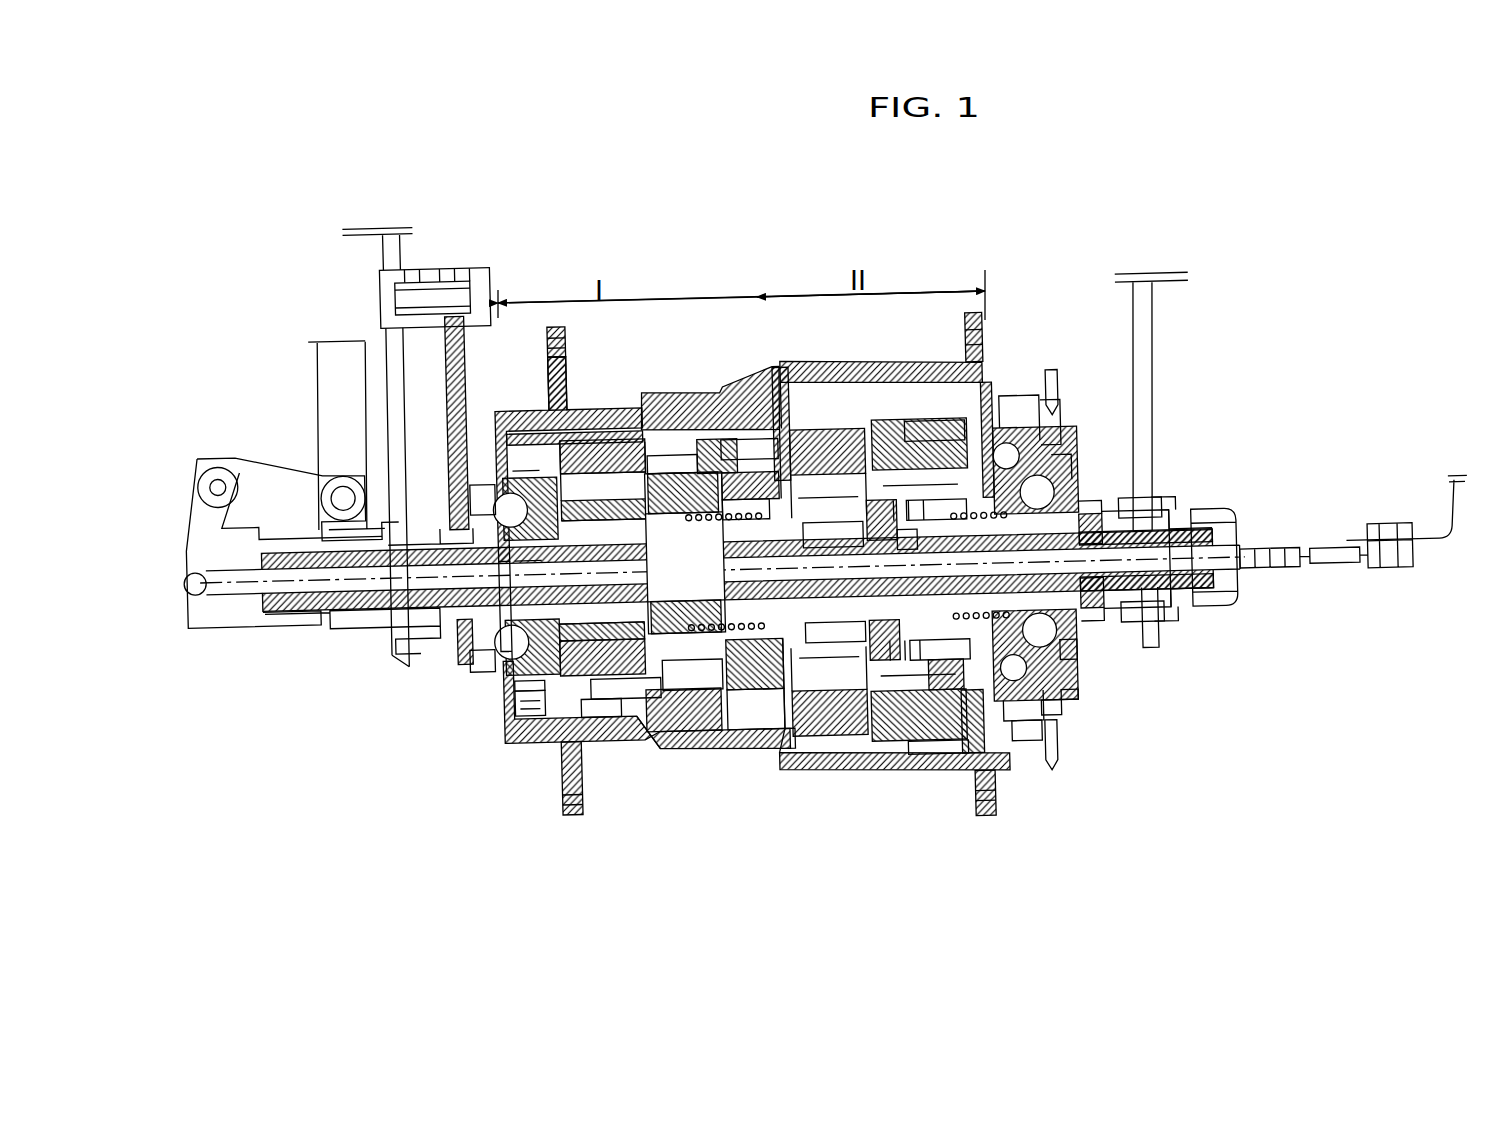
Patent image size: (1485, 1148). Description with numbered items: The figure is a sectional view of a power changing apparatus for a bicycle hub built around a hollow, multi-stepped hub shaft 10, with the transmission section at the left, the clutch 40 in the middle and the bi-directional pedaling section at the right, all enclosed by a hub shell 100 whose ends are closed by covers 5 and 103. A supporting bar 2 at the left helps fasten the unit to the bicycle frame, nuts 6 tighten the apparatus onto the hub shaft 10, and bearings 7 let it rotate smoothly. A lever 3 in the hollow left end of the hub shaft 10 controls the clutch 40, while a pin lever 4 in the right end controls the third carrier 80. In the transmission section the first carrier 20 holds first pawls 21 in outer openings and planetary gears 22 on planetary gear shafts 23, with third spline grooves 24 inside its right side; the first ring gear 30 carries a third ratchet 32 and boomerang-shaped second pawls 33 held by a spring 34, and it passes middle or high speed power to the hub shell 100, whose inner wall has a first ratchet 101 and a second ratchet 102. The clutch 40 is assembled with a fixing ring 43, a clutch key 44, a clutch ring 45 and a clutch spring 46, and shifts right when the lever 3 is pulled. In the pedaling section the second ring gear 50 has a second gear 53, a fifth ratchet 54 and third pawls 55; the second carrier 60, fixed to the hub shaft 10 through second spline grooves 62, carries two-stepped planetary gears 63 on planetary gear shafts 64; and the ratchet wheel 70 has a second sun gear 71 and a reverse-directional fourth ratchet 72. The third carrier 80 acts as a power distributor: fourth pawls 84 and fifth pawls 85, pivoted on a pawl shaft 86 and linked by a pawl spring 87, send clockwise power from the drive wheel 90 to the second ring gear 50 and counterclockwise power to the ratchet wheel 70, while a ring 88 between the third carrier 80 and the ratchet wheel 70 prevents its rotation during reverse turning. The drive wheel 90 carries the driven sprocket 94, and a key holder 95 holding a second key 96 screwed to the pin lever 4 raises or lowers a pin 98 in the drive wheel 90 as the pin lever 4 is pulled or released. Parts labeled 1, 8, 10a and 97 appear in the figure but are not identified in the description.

The shift lever 1 is at (397, 342).
The supporting bar 2 is at (453, 338).
The lever 3 is at (335, 363).
The pin lever 4 is at (1295, 556).
The cover 5 is at (489, 500).
The nuts 6 is at (358, 618).
The bearings 7 is at (480, 662).
The lever bracket 8 is at (219, 484).
The hub shaft 10 is at (320, 553).
The pin 10a is at (978, 404).
The first carrier 20 is at (585, 408).
The first pawls 21 is at (505, 705).
The planetary gears 22 is at (568, 665).
The planetary gear shaft 23 is at (522, 713).
The third spline grooves 24 is at (600, 740).
The first ring gear 30 is at (615, 440).
The third ratchet 32 is at (722, 740).
The second pawls 33 is at (660, 735).
The spring 34 is at (745, 438).
The clutch 40 is at (688, 455).
The fixing ring 43 is at (565, 812).
The clutch key 44 is at (497, 410).
The clutch ring 45 is at (660, 465).
The clutch spring 46 is at (715, 450).
The second ring gear 50 is at (876, 380).
The second gear 53 is at (842, 745).
The fifth ratchet 54 is at (1013, 745).
The third pawls 55 is at (700, 738).
The second carrier 60 is at (838, 395).
The second spline grooves 62 is at (1148, 595).
The two-stepped planetary gears 63 is at (752, 750).
The planetary gear shaft 64 is at (815, 740).
The ratchet wheel 70 is at (898, 400).
The second sun gear 71 is at (790, 740).
The fourth ratchet 72 is at (948, 760).
The third carrier 80 is at (1020, 430).
The fourth pawls 84 is at (935, 760).
The fifth pawls 85 is at (987, 768).
The pawl shaft 86 is at (875, 750).
The pawl spring 87 is at (965, 772).
The ring 88 is at (908, 760).
The drive wheel 90 is at (1075, 465).
The driven sprocket 94 is at (1050, 440).
The key holder 95 is at (1050, 470).
The second key 96 is at (1065, 668).
The ring 97 is at (1077, 642).
The pin 98 is at (1058, 707).
The hub shell 100 is at (775, 420).
The first ratchet 101 is at (520, 693).
The second ratchet 102 is at (690, 730).
The cover 103 is at (1000, 365).